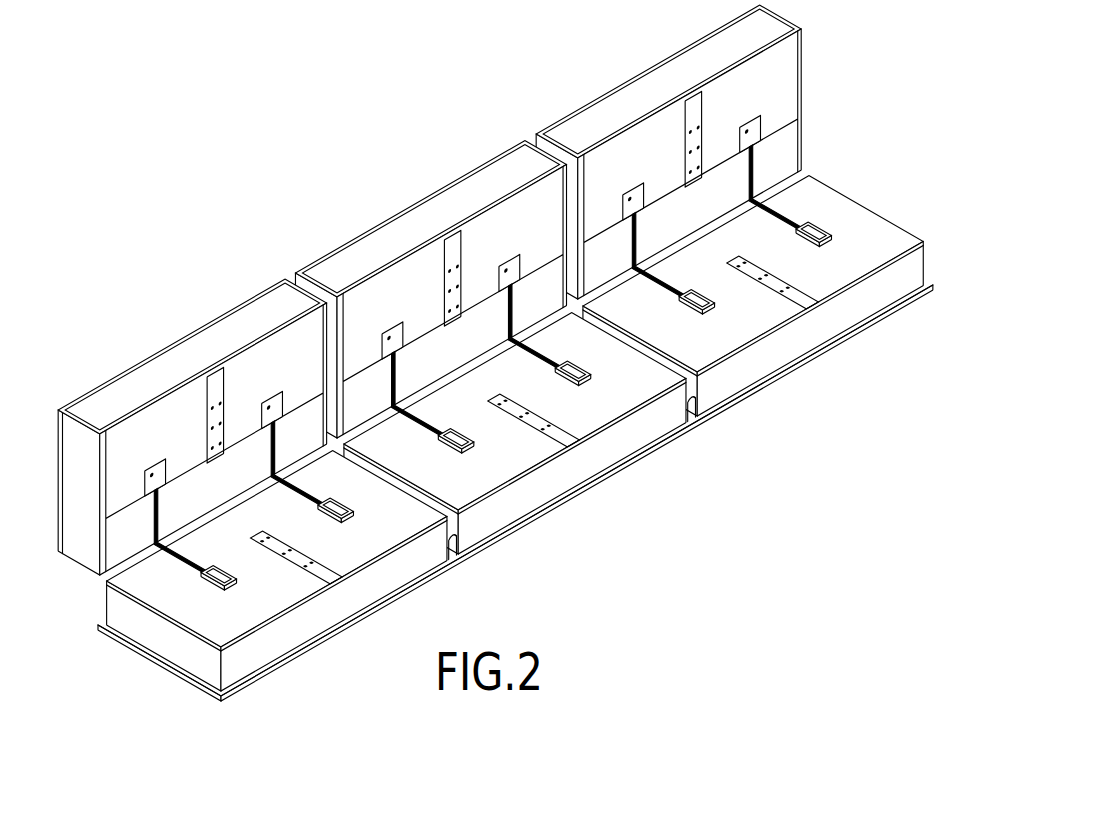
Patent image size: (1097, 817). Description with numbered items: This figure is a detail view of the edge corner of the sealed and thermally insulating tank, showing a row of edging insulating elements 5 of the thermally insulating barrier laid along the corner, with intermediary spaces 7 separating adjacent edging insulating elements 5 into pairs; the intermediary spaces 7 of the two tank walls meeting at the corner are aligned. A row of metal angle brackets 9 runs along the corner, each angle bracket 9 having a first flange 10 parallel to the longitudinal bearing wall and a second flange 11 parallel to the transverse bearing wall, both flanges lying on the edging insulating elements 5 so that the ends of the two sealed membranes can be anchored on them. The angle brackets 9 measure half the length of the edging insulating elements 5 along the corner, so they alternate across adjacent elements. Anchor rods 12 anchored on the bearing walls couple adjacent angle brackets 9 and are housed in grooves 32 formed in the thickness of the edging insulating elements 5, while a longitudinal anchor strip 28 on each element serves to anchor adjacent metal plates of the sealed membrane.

The edging insulating element 5 is at (515, 439).
The intermediary space 7 is at (588, 501).
The angle bracket 9 is at (660, 193).
The first flange 10 is at (510, 371).
The second flange 11 is at (431, 286).
The anchor rod 12 is at (453, 413).
The longitudinal anchor strip 28 is at (564, 420).
The groove 32 is at (453, 419).